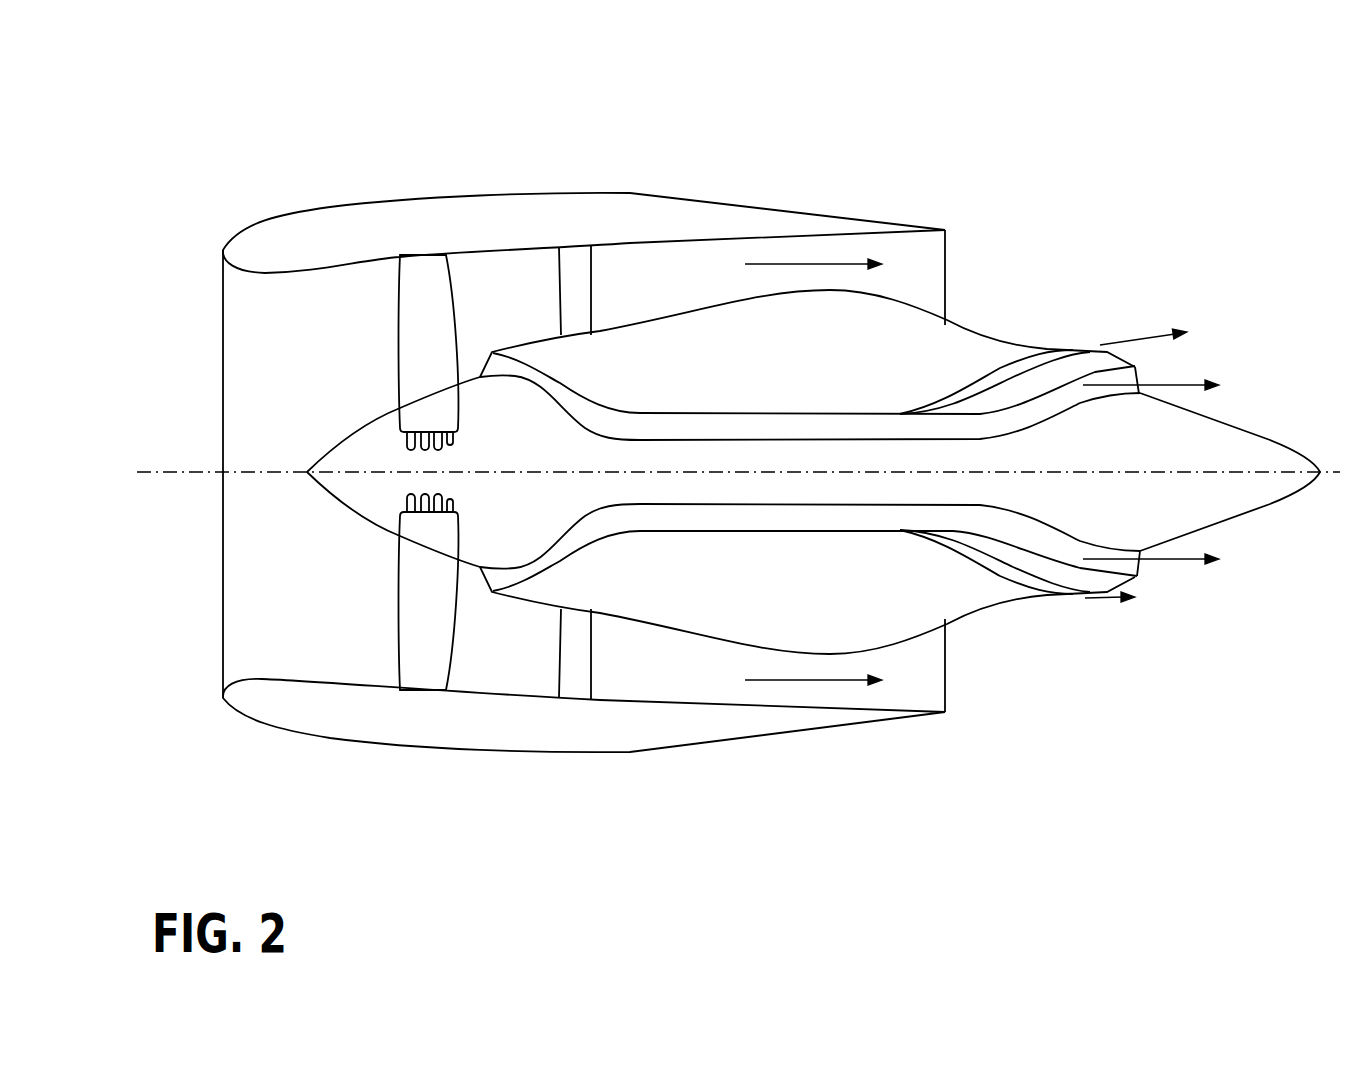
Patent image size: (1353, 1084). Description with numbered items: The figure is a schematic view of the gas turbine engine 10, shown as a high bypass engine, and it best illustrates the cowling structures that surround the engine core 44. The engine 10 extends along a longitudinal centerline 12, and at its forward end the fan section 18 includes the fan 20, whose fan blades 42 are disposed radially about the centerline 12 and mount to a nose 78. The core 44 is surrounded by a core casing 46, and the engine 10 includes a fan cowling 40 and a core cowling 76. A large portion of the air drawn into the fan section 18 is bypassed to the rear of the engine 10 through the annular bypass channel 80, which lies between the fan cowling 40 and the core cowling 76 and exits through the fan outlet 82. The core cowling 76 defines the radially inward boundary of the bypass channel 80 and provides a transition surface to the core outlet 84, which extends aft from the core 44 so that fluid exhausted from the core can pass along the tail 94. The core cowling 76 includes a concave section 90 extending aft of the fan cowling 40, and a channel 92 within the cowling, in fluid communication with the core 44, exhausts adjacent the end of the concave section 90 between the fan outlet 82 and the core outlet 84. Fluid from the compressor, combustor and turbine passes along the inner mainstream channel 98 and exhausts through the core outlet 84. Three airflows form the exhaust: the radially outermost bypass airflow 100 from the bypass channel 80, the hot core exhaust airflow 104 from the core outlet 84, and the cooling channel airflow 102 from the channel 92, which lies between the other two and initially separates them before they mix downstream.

The gas turbine engine 10 is at (412, 142).
The centerline 12 is at (172, 474).
The fan section 18 is at (373, 384).
The fan 20 is at (395, 322).
The fan cowling 40 is at (297, 213).
The fan blades 42 is at (417, 633).
The core 44 is at (623, 316).
The core casing 46 is at (737, 633).
The core cowling 76 is at (653, 617).
The nose 78 is at (350, 497).
The bypass channel 80 is at (698, 296).
The fan outlet 82 is at (937, 252).
The core outlet 84 is at (1147, 370).
The concave section 90 is at (967, 317).
The channel 92 is at (1027, 362).
The tail 94 is at (1263, 440).
The inner mainstream channel 98 is at (955, 428).
The bypass airflow 100 is at (855, 262).
The cooling channel airflow 102 is at (1130, 340).
The core exhaust airflow 104 is at (1190, 383).